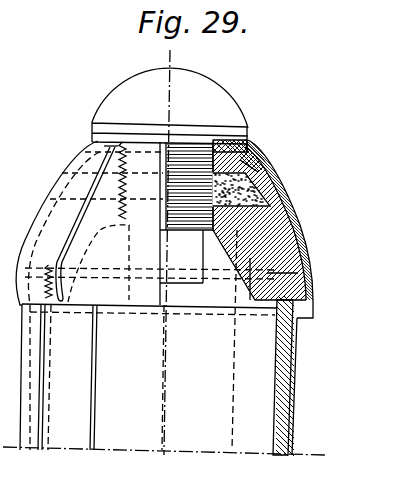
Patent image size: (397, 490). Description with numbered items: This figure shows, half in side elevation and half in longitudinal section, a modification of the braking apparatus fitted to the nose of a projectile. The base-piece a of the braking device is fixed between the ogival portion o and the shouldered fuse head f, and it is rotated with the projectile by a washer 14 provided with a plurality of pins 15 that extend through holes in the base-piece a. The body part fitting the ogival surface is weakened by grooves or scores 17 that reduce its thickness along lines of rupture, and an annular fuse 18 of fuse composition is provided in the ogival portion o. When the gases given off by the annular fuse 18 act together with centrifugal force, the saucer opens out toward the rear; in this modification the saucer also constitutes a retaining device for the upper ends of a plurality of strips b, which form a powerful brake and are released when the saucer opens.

The fuse head f is at (133, 86).
The washer 14 is at (233, 140).
The base-piece a is at (258, 163).
The pins 15 is at (257, 167).
The ring of fuse composition 18 is at (267, 191).
The grooves or scores 17 is at (78, 202).
The ogival portion o is at (281, 243).
The strips b is at (43, 235).